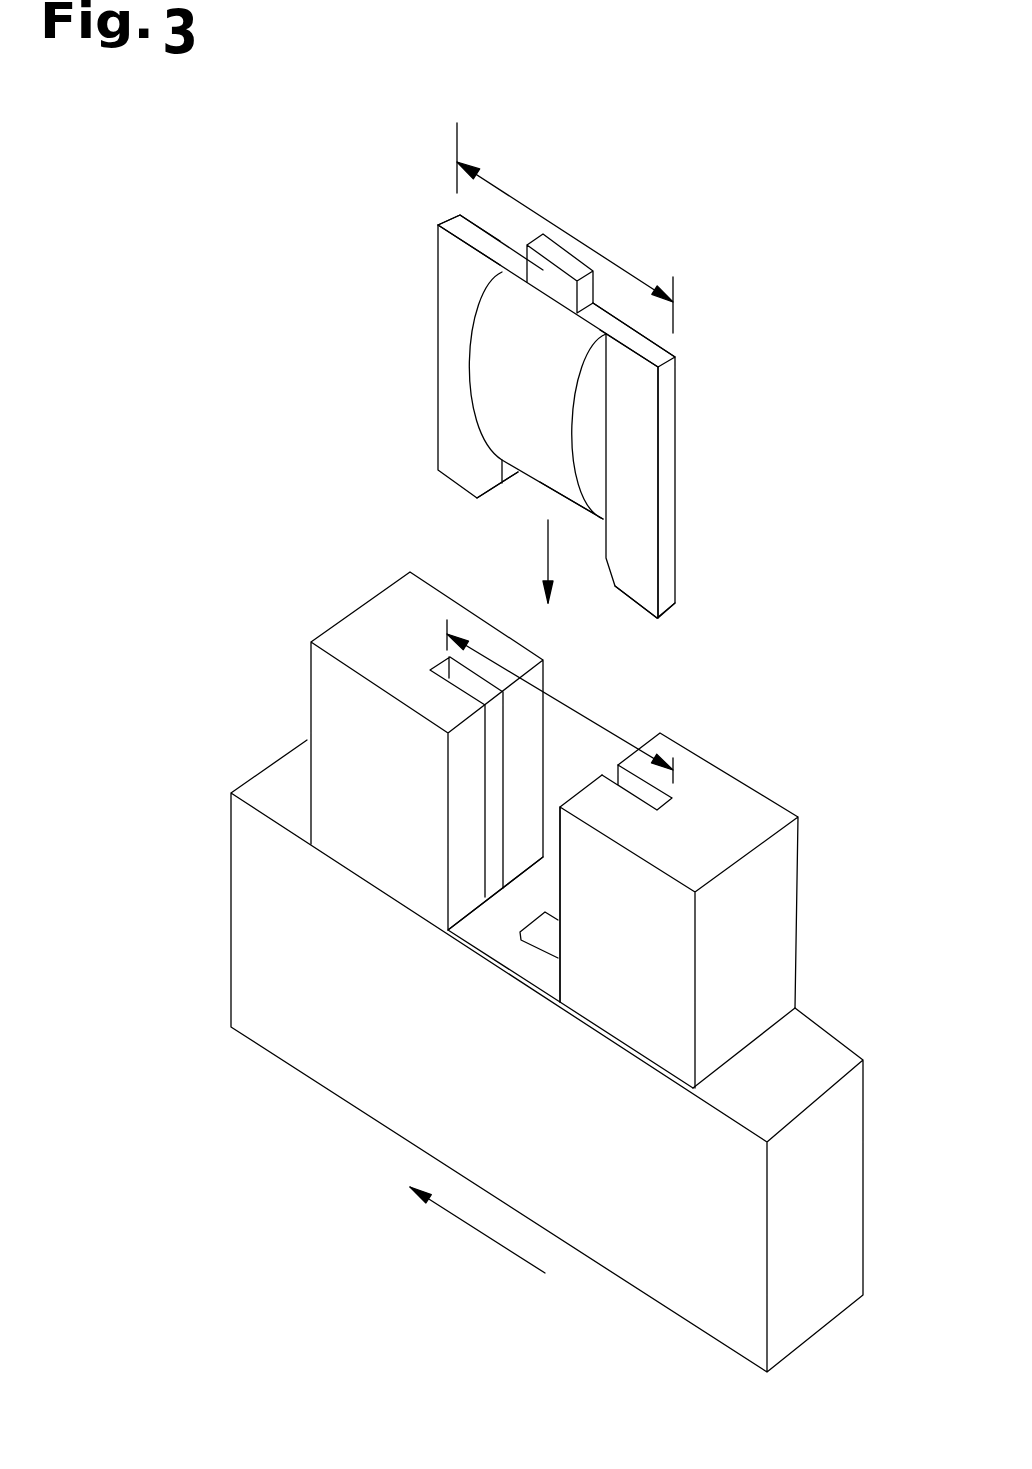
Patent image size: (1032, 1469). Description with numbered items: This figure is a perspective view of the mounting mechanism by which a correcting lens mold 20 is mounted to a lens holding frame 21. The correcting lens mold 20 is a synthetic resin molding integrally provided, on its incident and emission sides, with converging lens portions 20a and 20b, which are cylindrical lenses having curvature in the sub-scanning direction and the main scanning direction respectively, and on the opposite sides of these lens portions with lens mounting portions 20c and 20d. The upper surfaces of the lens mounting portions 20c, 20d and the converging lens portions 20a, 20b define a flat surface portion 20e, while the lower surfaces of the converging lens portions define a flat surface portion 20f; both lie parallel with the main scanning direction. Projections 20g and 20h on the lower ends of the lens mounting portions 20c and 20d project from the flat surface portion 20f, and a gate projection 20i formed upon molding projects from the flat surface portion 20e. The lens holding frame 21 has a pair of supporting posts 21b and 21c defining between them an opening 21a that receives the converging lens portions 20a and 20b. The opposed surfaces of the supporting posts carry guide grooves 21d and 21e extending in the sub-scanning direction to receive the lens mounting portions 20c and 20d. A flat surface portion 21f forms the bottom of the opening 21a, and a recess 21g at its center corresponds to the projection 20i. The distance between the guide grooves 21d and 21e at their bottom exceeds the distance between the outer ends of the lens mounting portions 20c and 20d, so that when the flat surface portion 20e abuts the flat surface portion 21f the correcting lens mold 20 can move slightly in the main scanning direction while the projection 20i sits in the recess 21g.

The correcting lens mold 20 is at (581, 365).
The converging lens portion 20a is at (498, 325).
The converging lens portion 20b is at (613, 291).
The lens mounting portion 20c is at (446, 400).
The lens mounting portion 20d is at (640, 513).
The flat surface portion 20e is at (473, 238).
The flat surface portion 20f is at (570, 508).
The projection 20g is at (474, 481).
The projection 20h is at (642, 592).
The projection 20i is at (558, 257).
The lens holding frame 21 is at (507, 930).
The opening 21a is at (583, 743).
The supporting post 21b is at (328, 759).
The supporting post 21c is at (662, 955).
The guide groove 21d is at (447, 669).
The guide groove 21e is at (665, 795).
The flat surface portion 21f is at (452, 933).
The recess 21g is at (532, 940).